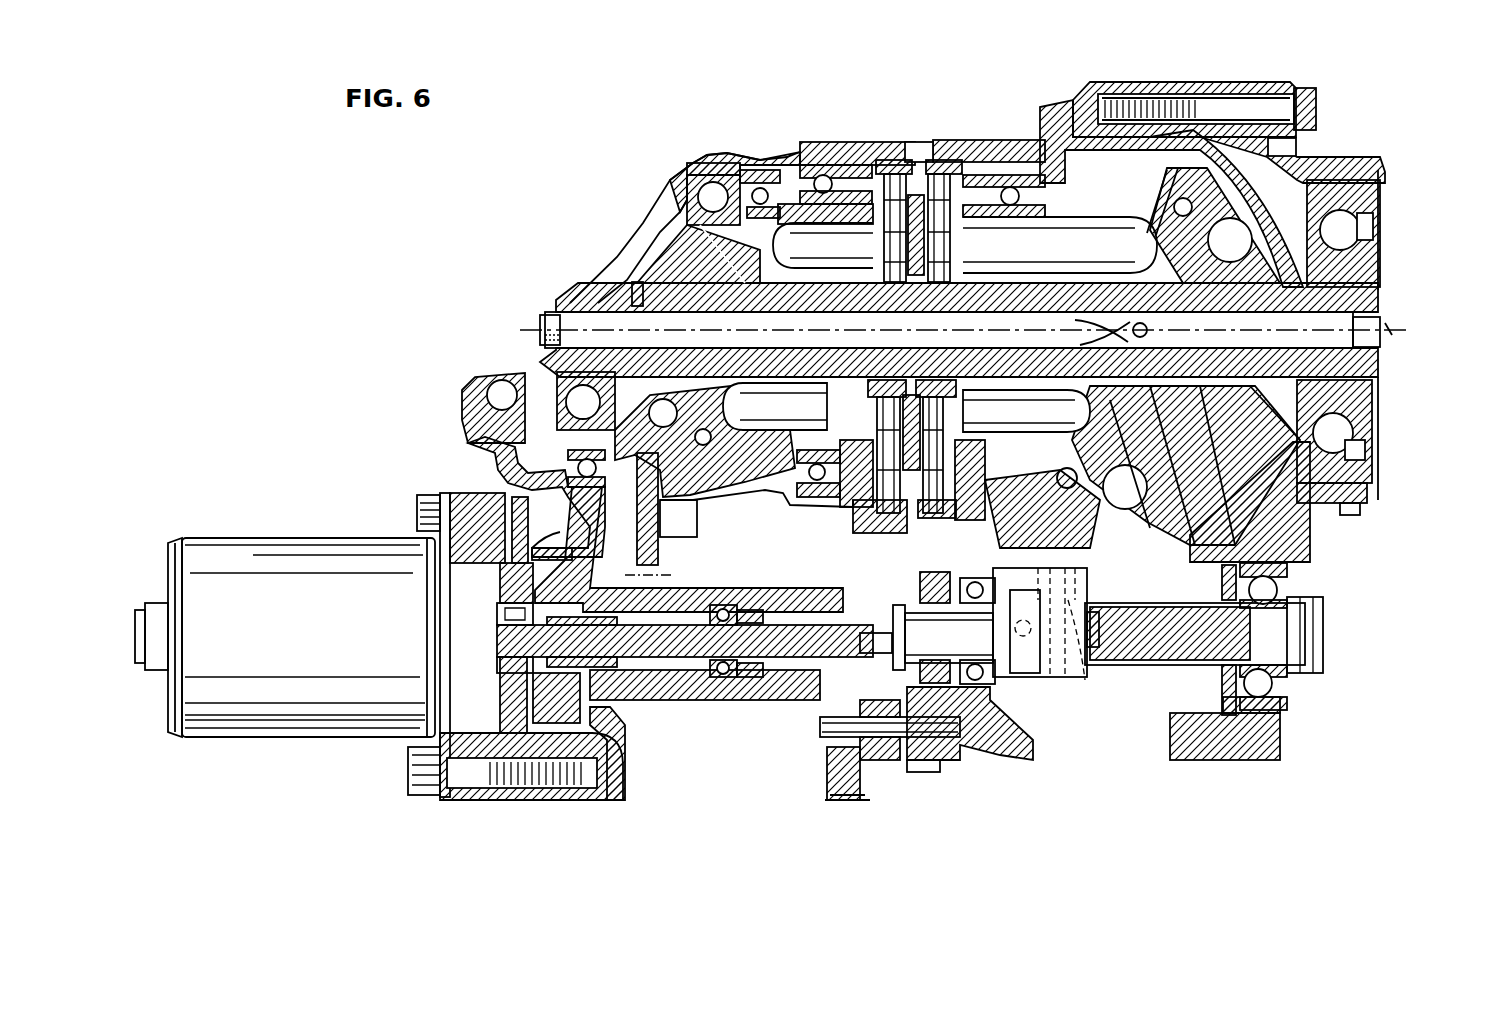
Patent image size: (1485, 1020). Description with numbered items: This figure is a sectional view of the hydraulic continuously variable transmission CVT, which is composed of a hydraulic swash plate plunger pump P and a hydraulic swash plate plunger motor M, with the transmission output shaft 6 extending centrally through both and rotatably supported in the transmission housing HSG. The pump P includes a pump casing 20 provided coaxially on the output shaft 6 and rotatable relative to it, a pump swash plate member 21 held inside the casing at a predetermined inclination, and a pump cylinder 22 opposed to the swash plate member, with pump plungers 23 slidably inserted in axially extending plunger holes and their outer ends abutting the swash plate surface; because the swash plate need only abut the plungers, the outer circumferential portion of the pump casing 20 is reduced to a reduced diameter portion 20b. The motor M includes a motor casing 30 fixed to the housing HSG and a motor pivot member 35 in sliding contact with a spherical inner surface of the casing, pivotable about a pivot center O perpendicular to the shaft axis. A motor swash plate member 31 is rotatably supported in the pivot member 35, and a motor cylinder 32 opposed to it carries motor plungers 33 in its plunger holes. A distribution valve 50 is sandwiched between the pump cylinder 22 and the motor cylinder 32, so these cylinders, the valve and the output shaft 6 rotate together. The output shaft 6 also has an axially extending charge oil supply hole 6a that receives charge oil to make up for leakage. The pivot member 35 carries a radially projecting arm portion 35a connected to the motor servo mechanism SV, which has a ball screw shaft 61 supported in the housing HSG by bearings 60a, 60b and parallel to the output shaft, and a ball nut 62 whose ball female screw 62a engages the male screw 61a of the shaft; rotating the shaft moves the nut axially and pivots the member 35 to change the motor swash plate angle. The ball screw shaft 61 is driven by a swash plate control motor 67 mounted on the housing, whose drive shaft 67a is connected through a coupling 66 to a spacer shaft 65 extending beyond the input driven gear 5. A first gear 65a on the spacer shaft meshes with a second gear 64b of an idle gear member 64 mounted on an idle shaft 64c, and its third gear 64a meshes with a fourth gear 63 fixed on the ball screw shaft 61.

The hydraulic swash plate plunger pump P is at (754, 128).
The hydraulic swash plate plunger motor M is at (1021, 112).
The hydraulic continuously variable transmission CVT is at (1360, 118).
The motor servo mechanism SV is at (386, 450).
The transmission housing HSG is at (712, 700).
The pivot center O is at (1111, 332).
The input driven gear 5 is at (660, 550).
The transmission output shaft 6 is at (1381, 310).
The charge oil supply hole 6a is at (590, 316).
The pump casing 20 is at (855, 142).
The reduced diameter portion 20b is at (768, 495).
The pump swash plate member 21 is at (745, 243).
The pump cylinder 22 is at (878, 142).
The pump plungers 23 is at (748, 420).
The motor casing 30 is at (1130, 100).
The motor swash plate member 31 is at (1100, 406).
The motor cylinder 32 is at (1052, 216).
The motor plungers 33 is at (1113, 242).
The motor pivot member 35 is at (1197, 182).
The arm portion 35a is at (1085, 550).
The distribution valve 50 is at (929, 130).
The bearing 60a is at (1290, 592).
The bearing 60b is at (952, 568).
The ball screw shaft 61 is at (1172, 655).
The male screw 61a is at (1165, 608).
The ball nut 62 is at (1058, 680).
The ball female screw 62a is at (1085, 700).
The fourth gear 63 is at (925, 580).
The idle gear member 64 is at (887, 745).
The third gear 64a is at (932, 762).
The second gear 64b is at (858, 800).
The idle shaft 64c is at (830, 745).
The spacer shaft 65 is at (785, 605).
The first gear 65a is at (858, 632).
The coupling 66 is at (630, 692).
The swash plate control motor 67 is at (317, 652).
The drive shaft 67a is at (600, 695).